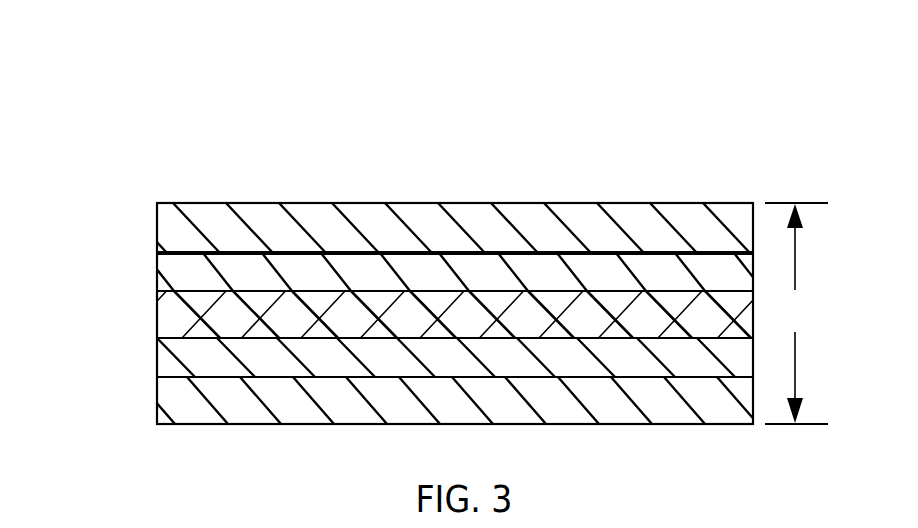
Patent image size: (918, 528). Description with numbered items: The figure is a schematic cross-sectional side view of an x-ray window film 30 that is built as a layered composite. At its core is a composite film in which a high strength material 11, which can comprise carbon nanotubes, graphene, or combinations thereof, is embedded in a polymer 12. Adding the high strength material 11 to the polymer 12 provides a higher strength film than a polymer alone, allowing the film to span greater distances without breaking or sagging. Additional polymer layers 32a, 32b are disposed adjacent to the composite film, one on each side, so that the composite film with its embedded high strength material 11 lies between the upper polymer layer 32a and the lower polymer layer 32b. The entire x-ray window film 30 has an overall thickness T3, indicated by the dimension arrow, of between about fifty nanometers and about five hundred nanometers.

The x-ray window film 30 is at (364, 128).
The polymer layer 32a is at (168, 212).
The polymer 12 is at (168, 267).
The high strength material 11 is at (168, 302).
The polymer layer 32b is at (168, 402).
The thickness T3 is at (796, 313).